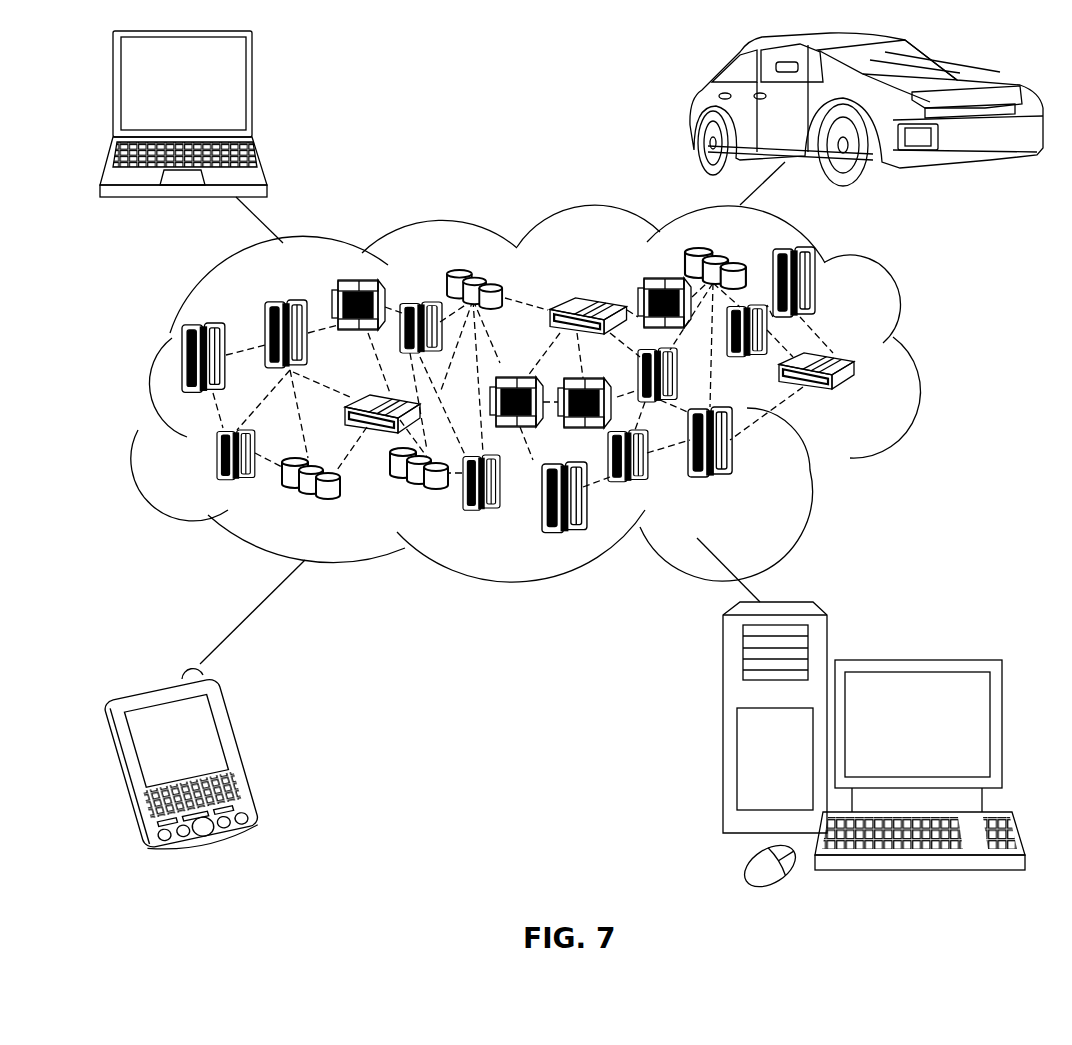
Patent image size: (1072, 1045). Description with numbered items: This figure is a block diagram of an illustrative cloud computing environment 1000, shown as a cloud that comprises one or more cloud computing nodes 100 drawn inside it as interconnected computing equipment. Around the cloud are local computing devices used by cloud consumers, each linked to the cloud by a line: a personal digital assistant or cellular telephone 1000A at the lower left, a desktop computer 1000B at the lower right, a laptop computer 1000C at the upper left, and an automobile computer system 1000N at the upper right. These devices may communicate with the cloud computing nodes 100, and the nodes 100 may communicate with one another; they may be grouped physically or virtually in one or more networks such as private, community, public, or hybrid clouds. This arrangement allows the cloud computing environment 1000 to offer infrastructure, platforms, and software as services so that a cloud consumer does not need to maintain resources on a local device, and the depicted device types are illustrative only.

The laptop computer 1000C is at (253, 93).
The automobile computer system 1000N is at (692, 110).
The cloud computing environment 1000 is at (917, 368).
The cloud computing nodes 100 is at (862, 398).
The personal digital assistant (PDA) or cellular telephone 1000A is at (245, 755).
The desktop computer 1000B is at (913, 658).